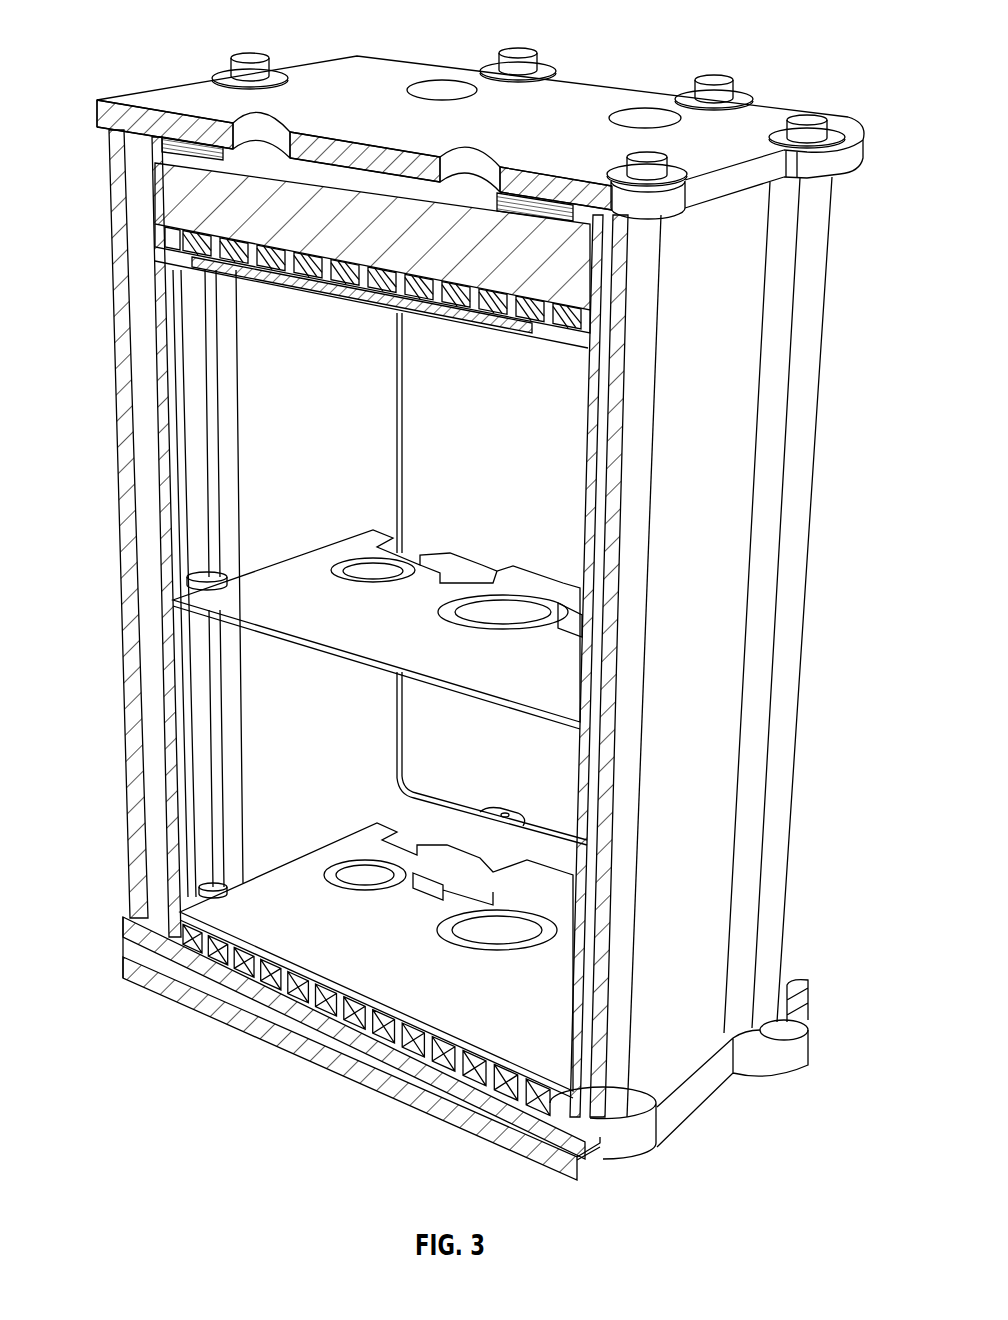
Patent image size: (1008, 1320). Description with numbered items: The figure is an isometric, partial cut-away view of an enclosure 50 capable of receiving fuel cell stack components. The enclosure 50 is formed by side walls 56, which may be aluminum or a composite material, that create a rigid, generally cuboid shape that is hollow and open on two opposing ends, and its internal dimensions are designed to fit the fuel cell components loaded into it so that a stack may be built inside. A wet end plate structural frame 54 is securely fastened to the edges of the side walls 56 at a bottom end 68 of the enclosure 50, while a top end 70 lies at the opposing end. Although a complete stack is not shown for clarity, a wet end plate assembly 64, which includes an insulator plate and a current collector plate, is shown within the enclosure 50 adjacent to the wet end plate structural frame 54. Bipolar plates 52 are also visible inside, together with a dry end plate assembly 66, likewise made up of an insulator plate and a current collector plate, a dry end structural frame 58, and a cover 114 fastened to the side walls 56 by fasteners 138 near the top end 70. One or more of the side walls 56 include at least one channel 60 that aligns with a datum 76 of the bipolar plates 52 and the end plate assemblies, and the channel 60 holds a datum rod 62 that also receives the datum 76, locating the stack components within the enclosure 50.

The enclosure 50 is at (116, 645).
The bipolar plates 52 is at (368, 642).
The wet end plate structural frame 54 is at (700, 1078).
The side walls 56 is at (377, 420).
The dry end structural frame 58 is at (577, 266).
The channel 60 is at (205, 823).
The datum rod 62 is at (222, 847).
The wet end plate assembly 64 is at (637, 1125).
The dry end plate assembly 66 is at (577, 330).
The bottom end 68 is at (254, 1088).
The top end 70 is at (606, 52).
The datum 76 is at (192, 582).
The cover 114 is at (314, 70).
The fasteners 138 is at (251, 54).